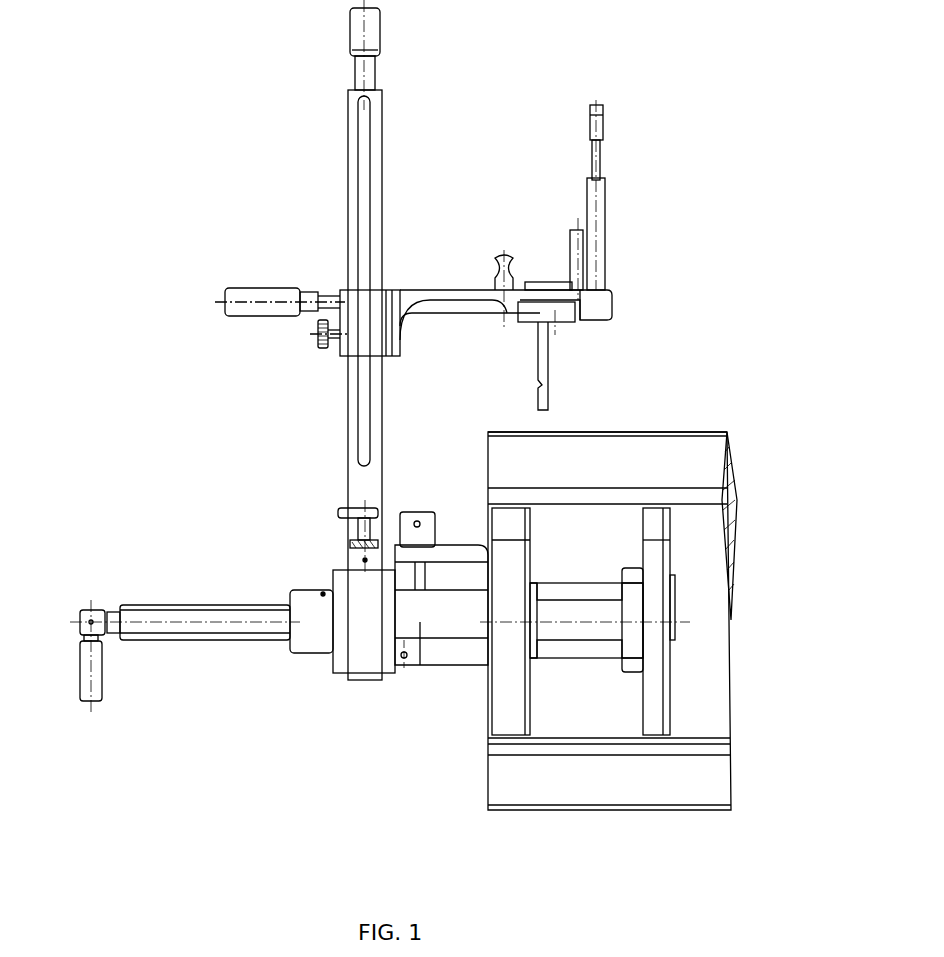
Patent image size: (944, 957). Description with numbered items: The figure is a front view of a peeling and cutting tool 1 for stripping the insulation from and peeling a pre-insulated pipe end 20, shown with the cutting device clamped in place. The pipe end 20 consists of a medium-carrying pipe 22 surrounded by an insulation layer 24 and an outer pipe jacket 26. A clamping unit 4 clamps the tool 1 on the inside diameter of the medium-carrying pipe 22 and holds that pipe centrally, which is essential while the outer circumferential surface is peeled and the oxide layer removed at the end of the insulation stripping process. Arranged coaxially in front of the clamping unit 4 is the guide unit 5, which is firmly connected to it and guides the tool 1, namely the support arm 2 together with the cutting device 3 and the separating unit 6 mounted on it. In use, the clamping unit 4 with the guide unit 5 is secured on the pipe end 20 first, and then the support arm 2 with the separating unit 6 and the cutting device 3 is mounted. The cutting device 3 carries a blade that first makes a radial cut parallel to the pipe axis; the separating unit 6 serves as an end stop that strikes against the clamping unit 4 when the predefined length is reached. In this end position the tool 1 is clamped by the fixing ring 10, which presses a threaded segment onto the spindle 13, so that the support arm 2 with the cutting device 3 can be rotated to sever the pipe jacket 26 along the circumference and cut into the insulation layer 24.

The peeling and cutting tool 1 is at (600, 74).
The support arm 2 is at (352, 178).
The cutting device 3 is at (635, 282).
The clamping unit 4 is at (658, 504).
The guide unit 5 is at (206, 667).
The separating unit 6 is at (462, 650).
The fixing ring 10 is at (310, 645).
The spindle 13 is at (172, 615).
The pipe end 20 is at (646, 402).
The medium-carrying pipe 22 is at (715, 497).
The insulation layer 24 is at (717, 467).
The pipe jacket 26 is at (727, 432).